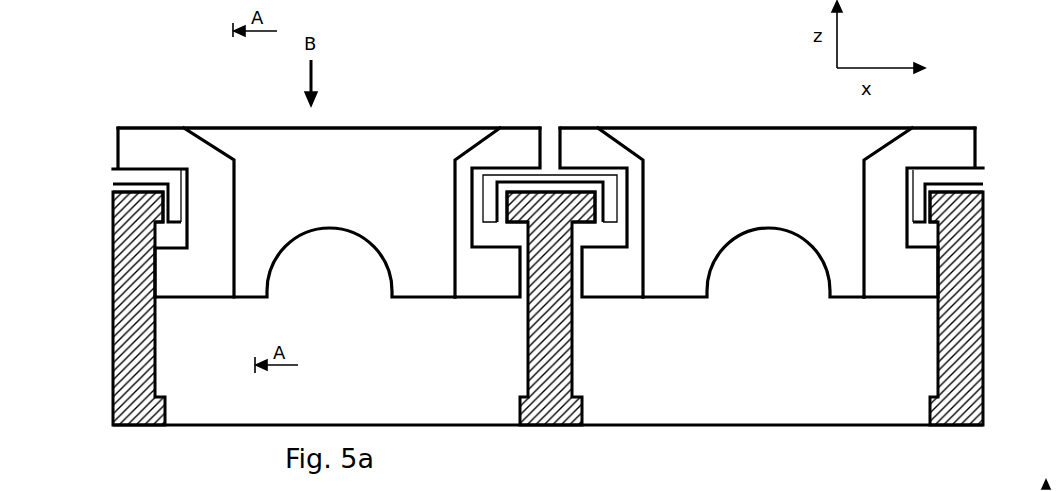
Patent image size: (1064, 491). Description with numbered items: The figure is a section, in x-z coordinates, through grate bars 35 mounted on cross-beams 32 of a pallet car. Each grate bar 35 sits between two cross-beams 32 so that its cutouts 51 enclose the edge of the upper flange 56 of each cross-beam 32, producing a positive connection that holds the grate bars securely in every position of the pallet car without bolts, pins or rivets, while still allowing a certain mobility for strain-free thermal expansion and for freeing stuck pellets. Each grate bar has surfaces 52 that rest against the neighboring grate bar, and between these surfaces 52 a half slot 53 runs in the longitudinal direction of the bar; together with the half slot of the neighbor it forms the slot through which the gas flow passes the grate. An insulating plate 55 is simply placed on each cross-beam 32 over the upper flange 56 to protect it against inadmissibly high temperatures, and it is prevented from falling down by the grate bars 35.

The cross-beam 32 is at (143, 408).
The grate bar 35 is at (790, 160).
The cutout 51 is at (487, 238).
The surface 52 is at (173, 143).
The half slot 53 is at (434, 143).
The insulating plate 55 is at (153, 180).
The upper flange 56 is at (140, 215).